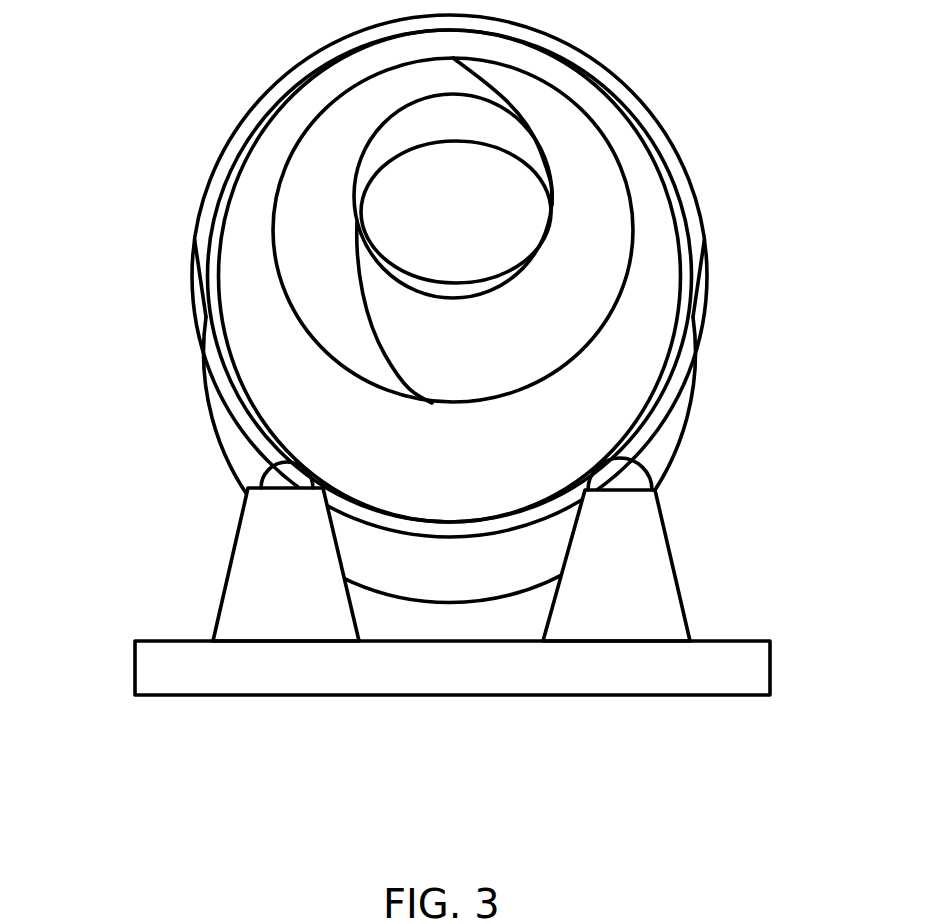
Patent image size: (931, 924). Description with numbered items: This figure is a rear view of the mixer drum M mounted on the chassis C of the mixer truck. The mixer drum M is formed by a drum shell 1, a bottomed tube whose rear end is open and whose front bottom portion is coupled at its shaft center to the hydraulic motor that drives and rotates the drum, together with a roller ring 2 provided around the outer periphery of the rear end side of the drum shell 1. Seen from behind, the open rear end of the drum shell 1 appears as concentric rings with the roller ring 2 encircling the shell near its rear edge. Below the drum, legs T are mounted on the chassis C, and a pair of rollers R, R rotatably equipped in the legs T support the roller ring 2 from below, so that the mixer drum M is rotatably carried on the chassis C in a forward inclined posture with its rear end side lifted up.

The mixer drum M is at (235, 142).
The drum shell 1 is at (198, 287).
The roller ring 2 is at (680, 190).
The roller R is at (263, 482).
The legs T is at (664, 604).
The chassis C is at (547, 678).